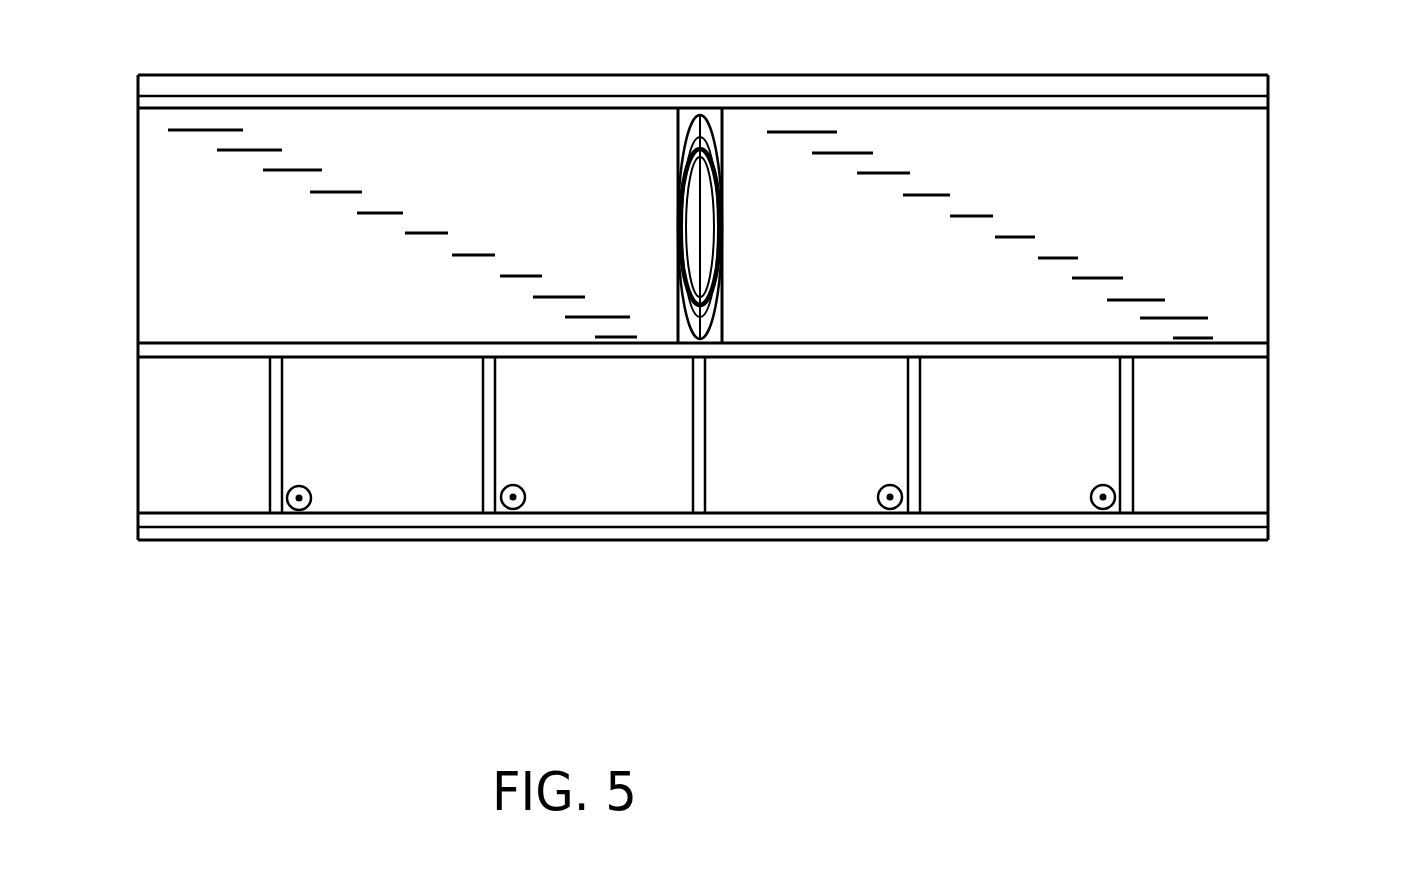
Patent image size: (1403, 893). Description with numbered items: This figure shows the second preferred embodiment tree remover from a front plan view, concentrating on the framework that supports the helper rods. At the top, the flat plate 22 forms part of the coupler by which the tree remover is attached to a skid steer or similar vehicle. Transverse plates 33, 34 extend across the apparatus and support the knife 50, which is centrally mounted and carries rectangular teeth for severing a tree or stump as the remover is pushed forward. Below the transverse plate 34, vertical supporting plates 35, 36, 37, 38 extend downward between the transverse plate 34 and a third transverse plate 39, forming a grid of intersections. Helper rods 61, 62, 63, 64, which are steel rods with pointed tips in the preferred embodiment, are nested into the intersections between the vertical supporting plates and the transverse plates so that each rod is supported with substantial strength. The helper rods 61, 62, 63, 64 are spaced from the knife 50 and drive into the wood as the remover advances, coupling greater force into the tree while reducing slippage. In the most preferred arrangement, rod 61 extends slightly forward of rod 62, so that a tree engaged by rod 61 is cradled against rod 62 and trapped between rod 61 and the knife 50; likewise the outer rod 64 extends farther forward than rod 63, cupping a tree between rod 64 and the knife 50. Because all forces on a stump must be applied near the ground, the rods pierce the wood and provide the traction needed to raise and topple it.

The flat plate 22 is at (1222, 230).
The transverse plate 33 is at (1257, 99).
The transverse plate 34 is at (1250, 351).
The vertical supporting plate 35 is at (1128, 453).
The vertical supporting plate 36 is at (913, 443).
The vertical supporting plate 37 is at (485, 458).
The vertical supporting plate 38 is at (273, 400).
The third transverse plate 39 is at (1253, 517).
The knife 50 is at (677, 134).
The helper rod 61 is at (1103, 497).
The helper rod 62 is at (890, 497).
The helper rod 63 is at (513, 497).
The outer helper rod 64 is at (299, 498).